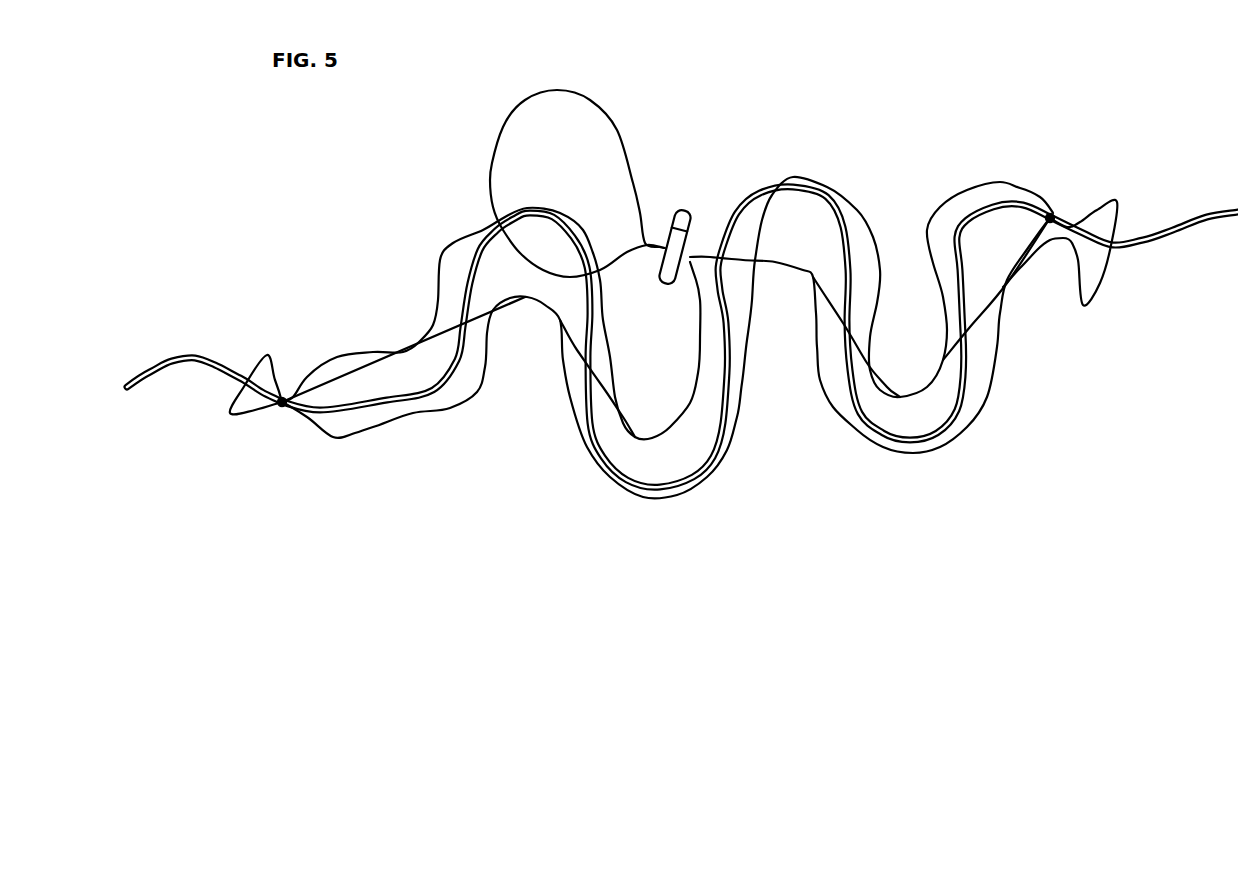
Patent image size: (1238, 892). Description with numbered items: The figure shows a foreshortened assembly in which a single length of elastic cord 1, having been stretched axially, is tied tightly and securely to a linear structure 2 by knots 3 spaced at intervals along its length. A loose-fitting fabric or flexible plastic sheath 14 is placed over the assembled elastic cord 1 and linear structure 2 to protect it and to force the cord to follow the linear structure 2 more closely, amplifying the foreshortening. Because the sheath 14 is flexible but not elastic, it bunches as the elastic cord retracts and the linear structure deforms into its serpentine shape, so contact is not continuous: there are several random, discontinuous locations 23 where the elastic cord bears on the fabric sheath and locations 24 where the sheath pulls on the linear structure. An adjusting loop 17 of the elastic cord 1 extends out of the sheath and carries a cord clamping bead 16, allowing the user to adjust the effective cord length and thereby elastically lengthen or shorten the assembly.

The elastic cord 1 is at (488, 303).
The linear structure 2 is at (1163, 227).
The knot 3 is at (282, 393).
The sheath 14 is at (870, 218).
The cord clamping bead 16 is at (684, 202).
The adjusting loop 17 is at (603, 102).
The location where the elastic cord bears on the fabric sheath 23 is at (528, 307).
The location where the sheath pulls on the linear structure 24 is at (532, 202).